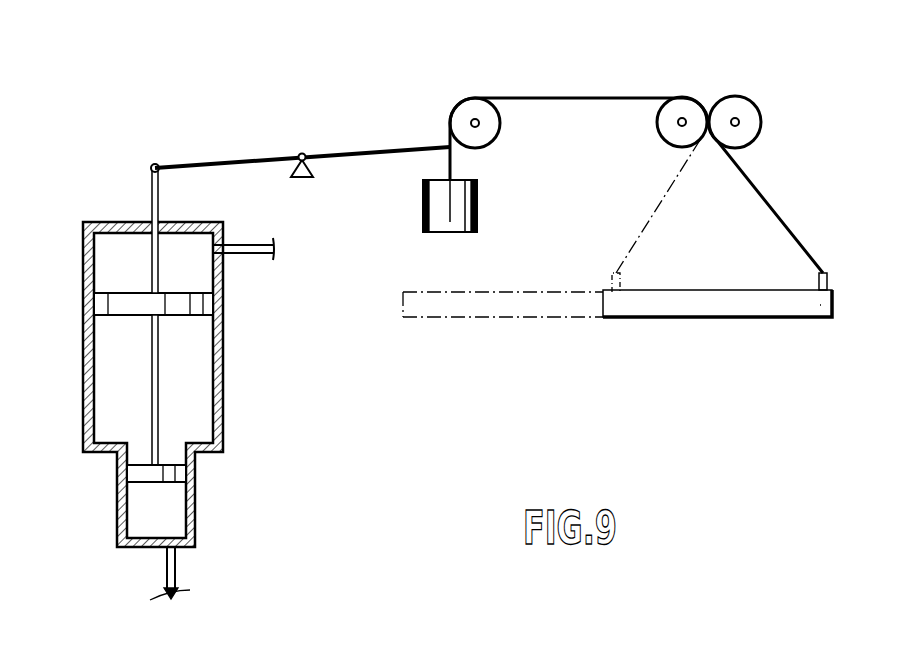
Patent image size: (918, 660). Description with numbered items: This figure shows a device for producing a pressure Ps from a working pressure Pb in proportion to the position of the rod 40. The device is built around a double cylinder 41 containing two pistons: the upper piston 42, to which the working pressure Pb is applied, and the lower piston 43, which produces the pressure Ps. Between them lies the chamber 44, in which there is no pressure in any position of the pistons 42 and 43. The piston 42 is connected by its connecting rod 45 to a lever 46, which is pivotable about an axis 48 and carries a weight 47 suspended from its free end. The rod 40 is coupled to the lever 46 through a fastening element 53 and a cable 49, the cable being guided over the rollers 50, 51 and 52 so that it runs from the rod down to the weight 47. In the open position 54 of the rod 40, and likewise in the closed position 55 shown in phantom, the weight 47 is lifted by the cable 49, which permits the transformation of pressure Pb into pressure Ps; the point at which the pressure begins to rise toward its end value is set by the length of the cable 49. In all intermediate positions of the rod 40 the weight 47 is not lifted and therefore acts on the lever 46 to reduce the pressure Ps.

The rod 40 is at (712, 305).
The double cylinder 41 is at (225, 388).
The piston 42 is at (92, 300).
The piston 43 is at (190, 470).
The chamber 44 is at (115, 376).
The piston rod 45 is at (152, 197).
The lever 46 is at (237, 157).
The weight 47 is at (477, 212).
The axis 48 is at (303, 155).
The cable 49 is at (549, 96).
The roller 50 is at (463, 100).
The roller 51 is at (678, 103).
The roller 52 is at (742, 105).
The fastening element 53 is at (828, 280).
The open position 54 is at (810, 305).
The closed position 55 is at (486, 308).